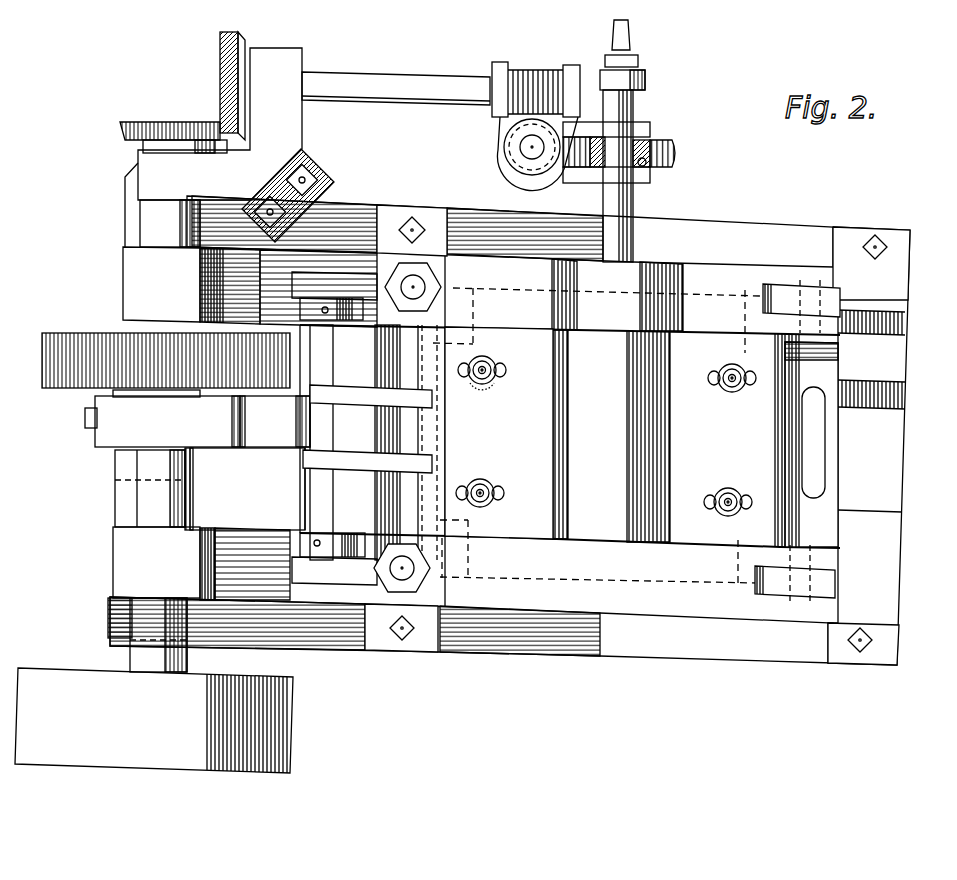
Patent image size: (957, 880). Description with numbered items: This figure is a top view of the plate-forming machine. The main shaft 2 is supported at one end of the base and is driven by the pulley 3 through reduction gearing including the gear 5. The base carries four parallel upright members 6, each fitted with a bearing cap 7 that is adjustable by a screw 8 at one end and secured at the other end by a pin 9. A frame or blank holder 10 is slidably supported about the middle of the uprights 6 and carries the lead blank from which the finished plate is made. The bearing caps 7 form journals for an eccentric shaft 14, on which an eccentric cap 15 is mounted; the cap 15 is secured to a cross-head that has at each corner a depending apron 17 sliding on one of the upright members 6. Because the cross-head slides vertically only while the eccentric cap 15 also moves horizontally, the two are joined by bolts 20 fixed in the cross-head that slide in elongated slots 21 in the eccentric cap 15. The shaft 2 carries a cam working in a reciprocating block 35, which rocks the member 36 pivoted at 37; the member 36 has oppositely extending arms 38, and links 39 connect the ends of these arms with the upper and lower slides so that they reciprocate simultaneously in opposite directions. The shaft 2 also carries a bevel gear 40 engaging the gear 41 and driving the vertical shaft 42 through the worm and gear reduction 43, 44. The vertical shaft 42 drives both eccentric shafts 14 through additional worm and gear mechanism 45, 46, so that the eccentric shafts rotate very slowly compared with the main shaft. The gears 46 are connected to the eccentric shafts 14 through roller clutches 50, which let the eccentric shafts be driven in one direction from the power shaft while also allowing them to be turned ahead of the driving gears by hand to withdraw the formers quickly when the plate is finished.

The shaft 2 is at (150, 501).
The pulley 3 is at (64, 670).
The reduction gear 5 is at (88, 333).
The upright member 6 is at (385, 240).
The bearing cap 7 is at (713, 271).
The screw 8 is at (429, 284).
The pin 9 is at (809, 275).
The frame or blank holder 10 is at (836, 368).
The eccentric shaft 14 is at (633, 199).
The eccentric cap 15 is at (499, 433).
The depending apron 17 is at (475, 309).
The bolt 20 is at (480, 383).
The elongated slot 21 is at (500, 376).
The reciprocating block 35 is at (128, 448).
The member 36 is at (258, 448).
The pivot 37 is at (303, 505).
The arm 38 is at (292, 450).
The link 39 is at (350, 390).
The bevel gear 40 is at (158, 122).
The gear 41 is at (220, 52).
The vertical shaft 42 is at (522, 150).
The worm 43 is at (533, 70).
The gear 44 is at (503, 146).
The worm 45 is at (545, 168).
The gear 46 is at (666, 150).
The roller clutch 50 is at (652, 170).